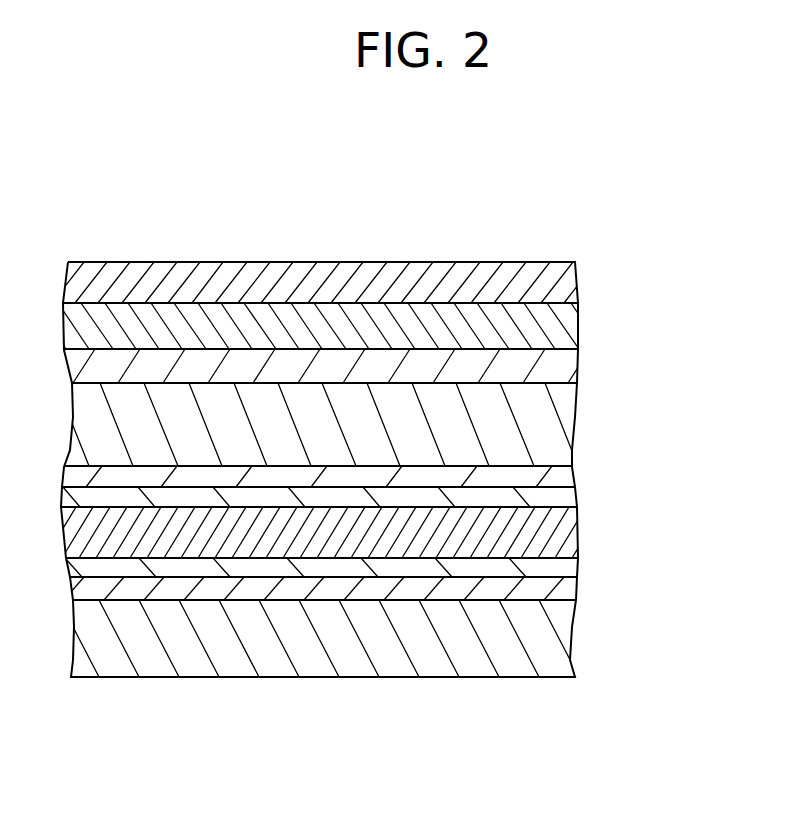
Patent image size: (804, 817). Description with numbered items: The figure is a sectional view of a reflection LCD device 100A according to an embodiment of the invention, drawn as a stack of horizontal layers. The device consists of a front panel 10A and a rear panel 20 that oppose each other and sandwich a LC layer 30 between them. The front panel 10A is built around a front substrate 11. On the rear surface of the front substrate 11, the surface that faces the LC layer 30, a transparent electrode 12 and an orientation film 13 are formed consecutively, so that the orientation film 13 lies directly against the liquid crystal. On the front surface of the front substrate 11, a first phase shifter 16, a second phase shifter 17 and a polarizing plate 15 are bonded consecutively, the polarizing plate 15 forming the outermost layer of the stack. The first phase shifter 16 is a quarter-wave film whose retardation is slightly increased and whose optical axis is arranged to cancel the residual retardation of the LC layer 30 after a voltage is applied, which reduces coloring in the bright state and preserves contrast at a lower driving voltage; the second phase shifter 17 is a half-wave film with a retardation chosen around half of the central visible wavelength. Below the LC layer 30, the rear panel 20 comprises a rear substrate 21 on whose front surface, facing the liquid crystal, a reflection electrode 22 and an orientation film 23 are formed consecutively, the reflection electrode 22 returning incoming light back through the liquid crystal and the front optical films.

The reflection LCD device 100A is at (362, 245).
The front panel 10A is at (685, 276).
The polarizing plate 15 is at (578, 276).
The second phase shifter 17 is at (576, 326).
The first phase shifter 16 is at (577, 364).
The front substrate 11 is at (575, 424).
The transparent electrode 12 is at (573, 474).
The orientation film 13 is at (575, 500).
The LC layer 30 is at (578, 535).
The rear panel 20 is at (685, 563).
The orientation film 23 is at (577, 569).
The reflection electrode 22 is at (576, 596).
The rear substrate 21 is at (573, 628).